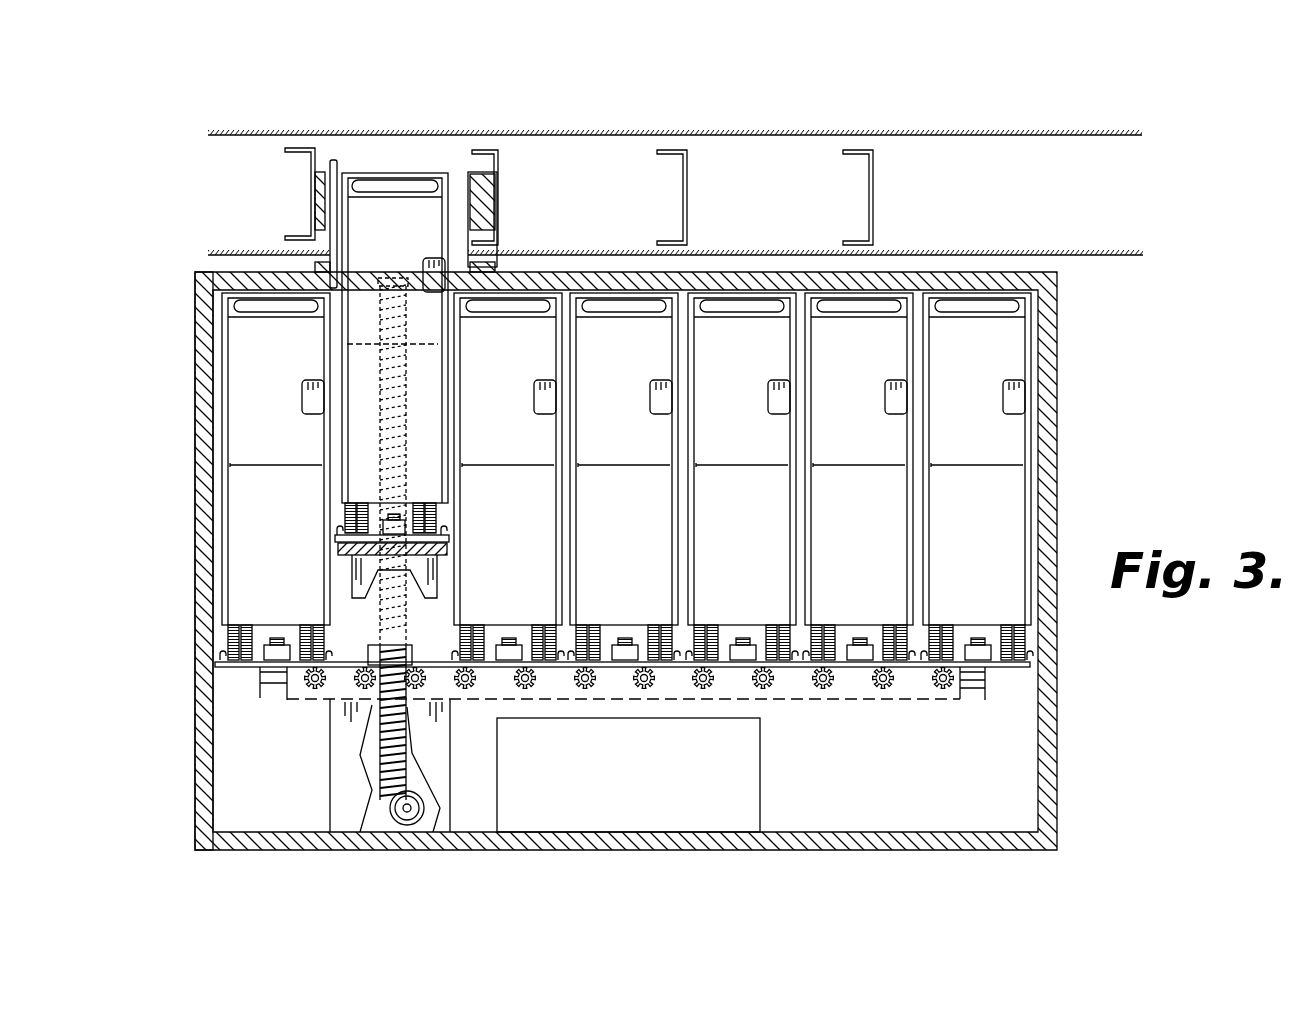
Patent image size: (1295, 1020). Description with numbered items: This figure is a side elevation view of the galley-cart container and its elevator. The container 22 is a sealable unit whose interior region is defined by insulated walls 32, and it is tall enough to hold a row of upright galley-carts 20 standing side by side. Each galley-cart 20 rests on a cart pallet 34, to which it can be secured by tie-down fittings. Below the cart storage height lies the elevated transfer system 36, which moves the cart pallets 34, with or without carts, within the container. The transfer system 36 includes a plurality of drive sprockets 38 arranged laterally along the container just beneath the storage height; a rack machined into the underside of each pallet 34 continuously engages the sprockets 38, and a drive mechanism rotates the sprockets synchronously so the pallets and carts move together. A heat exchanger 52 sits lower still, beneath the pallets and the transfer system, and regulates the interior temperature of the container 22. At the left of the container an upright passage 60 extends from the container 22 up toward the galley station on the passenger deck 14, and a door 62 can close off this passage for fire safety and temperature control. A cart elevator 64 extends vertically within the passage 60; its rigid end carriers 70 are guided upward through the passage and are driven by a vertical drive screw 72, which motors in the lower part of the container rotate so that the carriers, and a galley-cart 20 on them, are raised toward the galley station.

The passenger deck 14 is at (1120, 133).
The galley-cart 20 is at (445, 215).
The container 22 is at (1060, 430).
The insulated walls 32 is at (197, 400).
The cart pallet 34 is at (1012, 668).
The elevated transfer system 36 is at (240, 685).
The drive sprockets 38 is at (883, 688).
The heat exchanger 52 is at (765, 800).
The upright passage 60 is at (415, 148).
The door 62 is at (337, 165).
The cart elevator 64 is at (325, 775).
The end carriers 70 is at (430, 577).
The vertical drive screw 72 is at (395, 625).